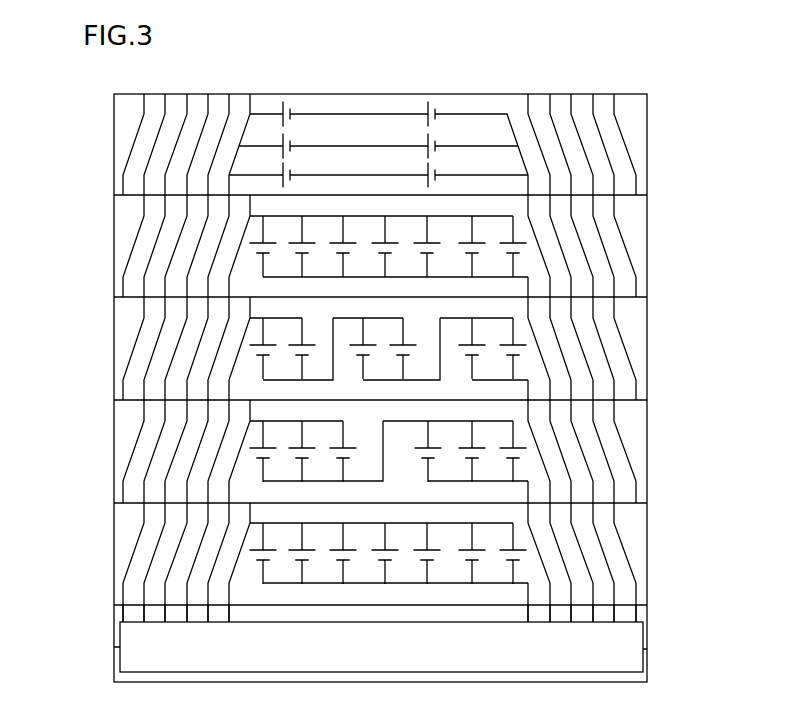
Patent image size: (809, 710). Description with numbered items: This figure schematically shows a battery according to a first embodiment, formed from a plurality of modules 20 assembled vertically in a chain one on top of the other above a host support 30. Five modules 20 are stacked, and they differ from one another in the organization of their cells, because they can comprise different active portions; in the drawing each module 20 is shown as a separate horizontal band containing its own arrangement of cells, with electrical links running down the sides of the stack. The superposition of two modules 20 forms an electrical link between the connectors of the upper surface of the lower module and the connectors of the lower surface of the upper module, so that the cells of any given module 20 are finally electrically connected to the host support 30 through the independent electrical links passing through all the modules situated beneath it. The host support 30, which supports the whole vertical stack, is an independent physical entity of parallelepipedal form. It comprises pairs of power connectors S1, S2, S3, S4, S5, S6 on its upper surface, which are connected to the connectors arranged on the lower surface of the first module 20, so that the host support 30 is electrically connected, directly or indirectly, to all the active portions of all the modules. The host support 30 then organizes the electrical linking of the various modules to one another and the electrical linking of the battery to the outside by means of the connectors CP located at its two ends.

The module 20 is at (650, 150).
The host support 30 is at (114, 622).
The connectors CP is at (381, 649).
The power connector S1 is at (378, 613).
The power connector S2 is at (378, 613).
The power connector S3 is at (378, 613).
The power connector S4 is at (381, 613).
The power connector S5 is at (378, 613).
The power connector S6 is at (379, 613).